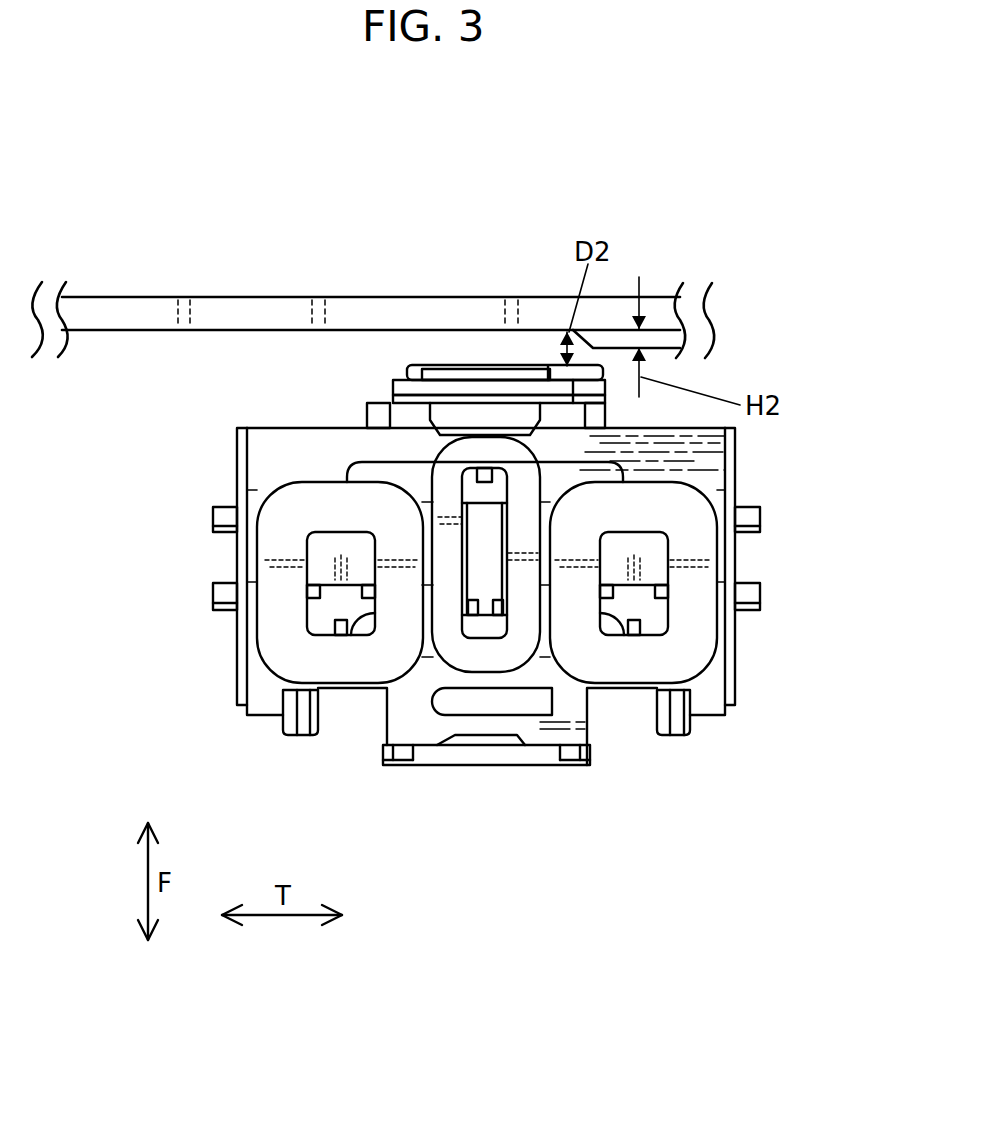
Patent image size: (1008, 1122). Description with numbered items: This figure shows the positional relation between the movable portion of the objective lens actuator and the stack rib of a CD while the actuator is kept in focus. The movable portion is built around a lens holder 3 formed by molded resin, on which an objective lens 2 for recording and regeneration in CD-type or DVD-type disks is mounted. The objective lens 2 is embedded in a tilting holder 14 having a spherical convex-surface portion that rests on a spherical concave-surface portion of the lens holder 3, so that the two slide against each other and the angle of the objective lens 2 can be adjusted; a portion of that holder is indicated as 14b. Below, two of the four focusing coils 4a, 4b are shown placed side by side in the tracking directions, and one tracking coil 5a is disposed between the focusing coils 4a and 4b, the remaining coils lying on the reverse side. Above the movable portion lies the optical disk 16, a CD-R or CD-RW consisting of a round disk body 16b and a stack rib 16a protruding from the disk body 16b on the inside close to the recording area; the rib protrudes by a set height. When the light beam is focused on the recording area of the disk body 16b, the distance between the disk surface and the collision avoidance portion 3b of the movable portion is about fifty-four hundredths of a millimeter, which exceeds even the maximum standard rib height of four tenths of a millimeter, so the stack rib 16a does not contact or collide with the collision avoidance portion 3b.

The objective lens 2 is at (497, 387).
The lens holder 3 is at (705, 443).
The collision avoidance portion 3b is at (558, 370).
The focusing coil 4a is at (287, 648).
The focusing coil 4b is at (685, 617).
The tracking coil 5a is at (457, 650).
The tilting holder 14 is at (468, 385).
The plate flange 14b is at (395, 392).
The optical disk 16 is at (128, 297).
The stack rib 16a is at (660, 337).
The disk body 16b is at (262, 312).